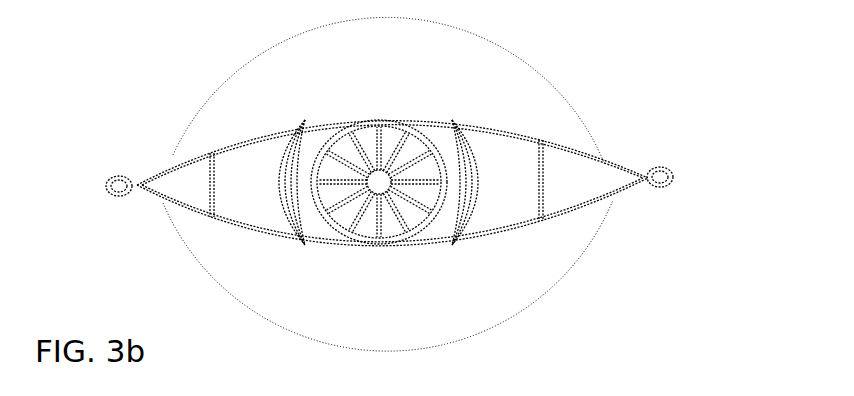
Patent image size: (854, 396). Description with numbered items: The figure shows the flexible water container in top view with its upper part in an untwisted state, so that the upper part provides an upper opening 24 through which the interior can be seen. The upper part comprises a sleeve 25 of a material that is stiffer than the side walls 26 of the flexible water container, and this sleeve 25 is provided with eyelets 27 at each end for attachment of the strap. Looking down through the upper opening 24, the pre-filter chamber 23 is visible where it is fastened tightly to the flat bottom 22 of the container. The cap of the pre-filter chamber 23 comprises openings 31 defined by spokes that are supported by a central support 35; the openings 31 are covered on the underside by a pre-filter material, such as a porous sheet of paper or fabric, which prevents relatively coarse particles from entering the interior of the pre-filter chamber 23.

The flat bottom 22 is at (502, 182).
The pre-filter chamber 23 is at (312, 145).
The upper opening 24 is at (593, 175).
The sleeve 25 is at (245, 135).
The side walls 26 is at (250, 68).
The eyelets 27 is at (114, 176).
The openings 31 is at (413, 145).
The central support 35 is at (379, 182).